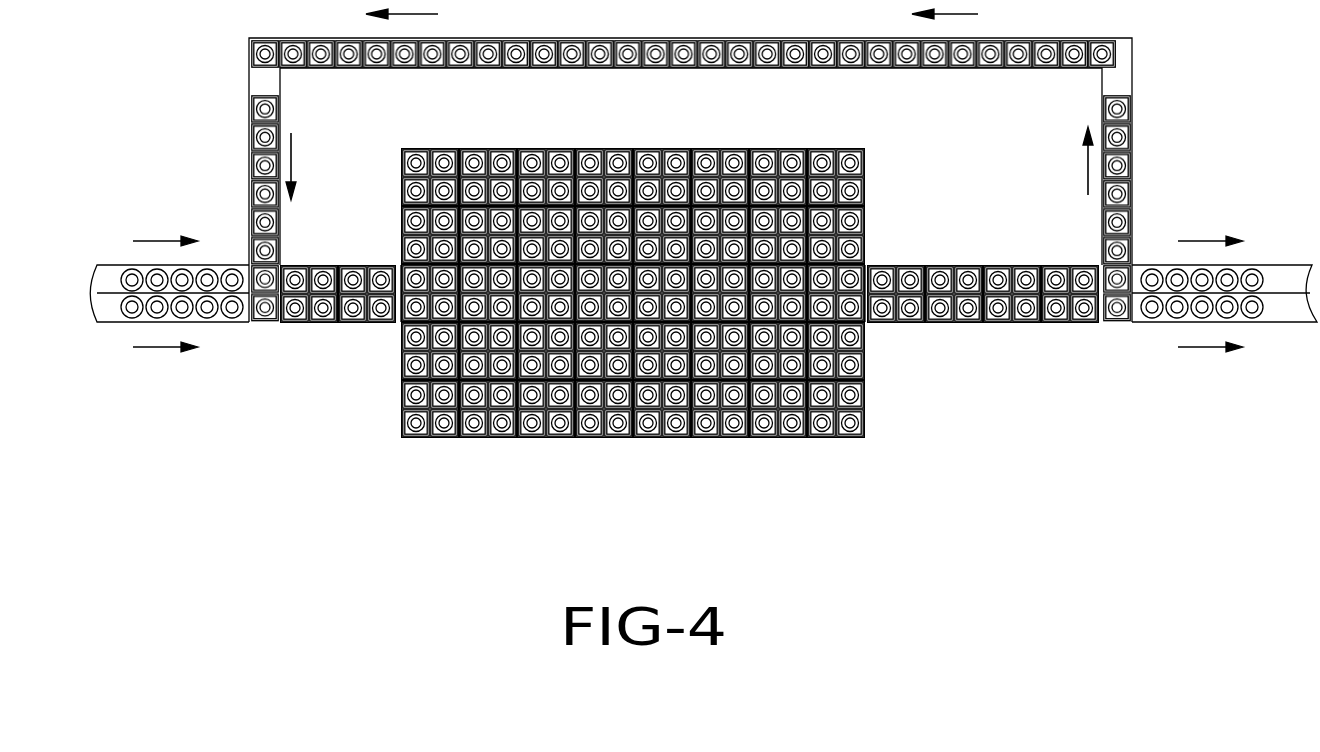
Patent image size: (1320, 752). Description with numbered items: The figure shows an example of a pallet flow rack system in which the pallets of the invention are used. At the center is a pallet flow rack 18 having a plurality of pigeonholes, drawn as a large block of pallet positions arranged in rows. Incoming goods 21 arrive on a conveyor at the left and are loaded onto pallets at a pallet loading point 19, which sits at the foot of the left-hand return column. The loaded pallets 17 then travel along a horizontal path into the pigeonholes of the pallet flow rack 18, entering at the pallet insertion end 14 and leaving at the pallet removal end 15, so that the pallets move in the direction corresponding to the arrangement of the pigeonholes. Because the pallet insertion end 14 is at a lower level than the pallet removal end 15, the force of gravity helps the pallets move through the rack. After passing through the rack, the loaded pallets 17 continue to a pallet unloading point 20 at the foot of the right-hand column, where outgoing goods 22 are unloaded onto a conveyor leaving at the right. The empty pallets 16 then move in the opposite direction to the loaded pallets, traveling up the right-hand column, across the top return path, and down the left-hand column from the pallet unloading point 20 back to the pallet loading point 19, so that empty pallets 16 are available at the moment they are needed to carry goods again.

The pallet insertion end 14 is at (398, 323).
The pallet removal end 15 is at (868, 322).
The empty pallets 16 is at (250, 122).
The loaded pallets 17 is at (326, 270).
The pallet flow rack 18 is at (618, 440).
The pallet loading point 19 is at (265, 322).
The pallet unloading point 20 is at (1118, 322).
The incoming goods 21 is at (117, 265).
The outgoing goods 22 is at (1268, 265).